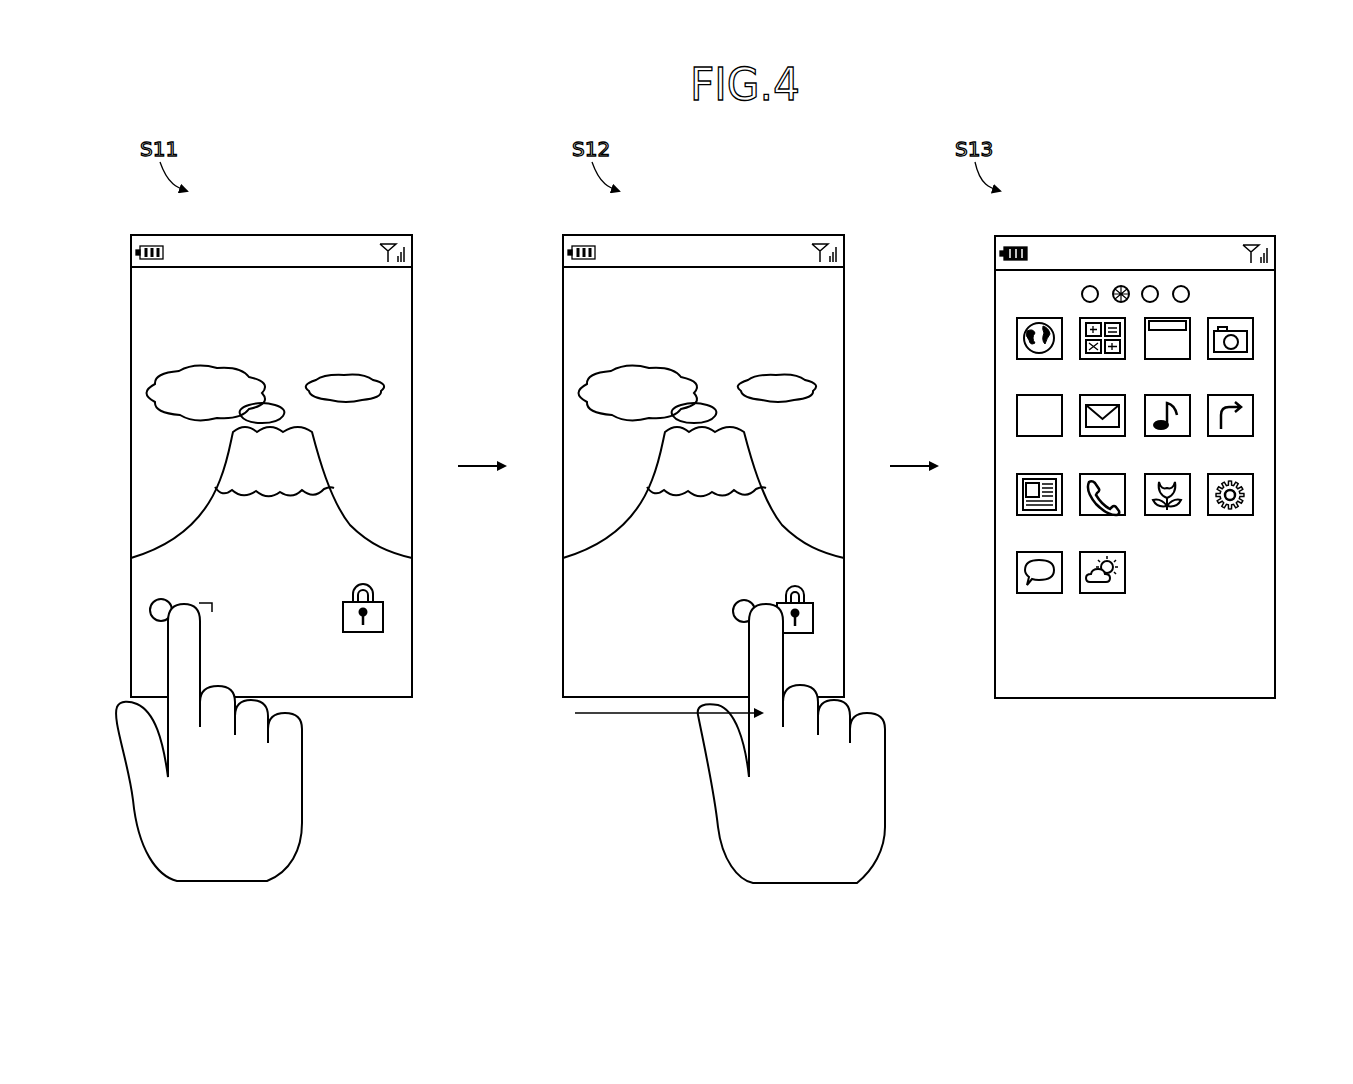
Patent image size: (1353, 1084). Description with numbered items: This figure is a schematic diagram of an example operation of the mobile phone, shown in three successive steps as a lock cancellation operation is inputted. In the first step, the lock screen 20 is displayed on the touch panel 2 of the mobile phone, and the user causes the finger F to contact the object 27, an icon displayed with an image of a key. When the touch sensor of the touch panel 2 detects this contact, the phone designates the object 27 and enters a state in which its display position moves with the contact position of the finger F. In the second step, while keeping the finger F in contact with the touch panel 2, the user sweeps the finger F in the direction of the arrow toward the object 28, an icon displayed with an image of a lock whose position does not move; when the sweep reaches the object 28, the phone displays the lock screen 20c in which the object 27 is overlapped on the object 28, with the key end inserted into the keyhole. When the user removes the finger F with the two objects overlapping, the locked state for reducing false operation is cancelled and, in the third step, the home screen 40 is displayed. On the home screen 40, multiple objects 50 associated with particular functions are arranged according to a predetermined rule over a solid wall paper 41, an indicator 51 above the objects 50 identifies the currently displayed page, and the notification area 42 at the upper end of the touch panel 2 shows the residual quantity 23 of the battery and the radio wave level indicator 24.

The touch panel 2 is at (1275, 670).
The lock screen 20 is at (304, 228).
The lock screen 20c is at (734, 228).
The residual quantity 23 is at (1015, 246).
The radio wave level indicator 24 is at (1252, 244).
The object 27 is at (165, 598).
The object 28 is at (383, 615).
The home screen 40 is at (1087, 237).
The wall paper 41 is at (1240, 590).
The notification area 42 is at (1150, 250).
The object 50 is at (1016, 340).
The indicator 51 is at (1082, 294).
The finger F is at (188, 663).